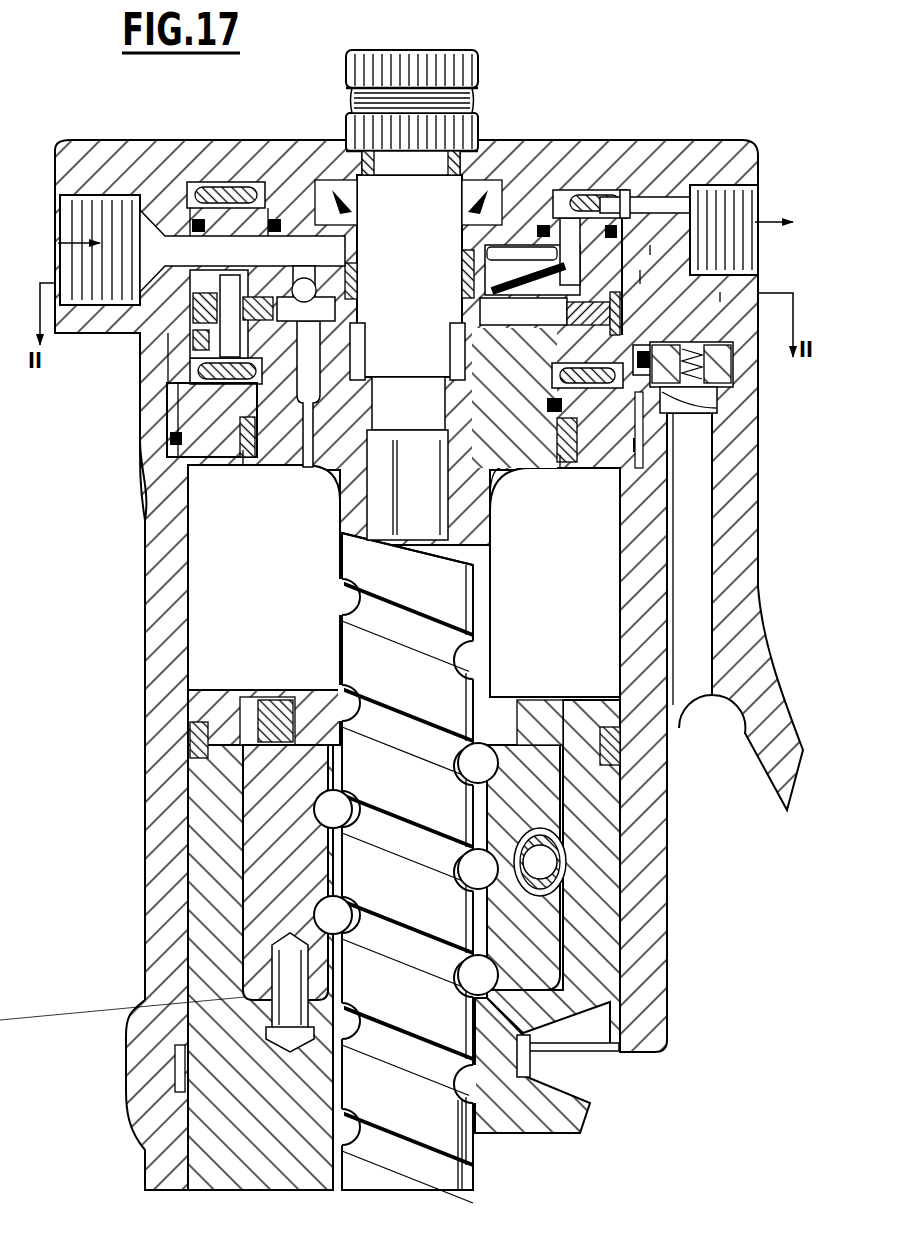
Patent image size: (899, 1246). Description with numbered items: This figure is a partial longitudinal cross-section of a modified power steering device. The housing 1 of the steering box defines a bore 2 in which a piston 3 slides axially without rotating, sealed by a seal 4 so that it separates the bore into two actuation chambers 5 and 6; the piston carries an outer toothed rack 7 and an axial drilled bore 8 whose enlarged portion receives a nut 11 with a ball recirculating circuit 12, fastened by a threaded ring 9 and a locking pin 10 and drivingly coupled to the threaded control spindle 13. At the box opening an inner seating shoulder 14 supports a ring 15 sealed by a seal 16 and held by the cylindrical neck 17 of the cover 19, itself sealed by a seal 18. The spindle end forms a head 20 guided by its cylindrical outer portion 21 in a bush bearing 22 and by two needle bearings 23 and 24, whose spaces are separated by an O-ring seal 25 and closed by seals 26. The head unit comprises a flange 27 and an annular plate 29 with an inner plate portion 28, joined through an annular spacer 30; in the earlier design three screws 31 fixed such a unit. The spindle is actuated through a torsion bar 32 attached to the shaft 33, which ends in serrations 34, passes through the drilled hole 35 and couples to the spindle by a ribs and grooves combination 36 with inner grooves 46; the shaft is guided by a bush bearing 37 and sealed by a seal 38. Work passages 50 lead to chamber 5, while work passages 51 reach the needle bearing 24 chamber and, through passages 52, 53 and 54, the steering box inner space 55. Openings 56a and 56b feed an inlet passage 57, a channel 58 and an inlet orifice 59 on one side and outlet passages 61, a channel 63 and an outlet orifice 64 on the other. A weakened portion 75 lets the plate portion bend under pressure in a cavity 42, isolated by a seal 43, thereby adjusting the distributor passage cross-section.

The housing 1 is at (165, 578).
The bore 2 is at (616, 652).
The piston 3 is at (200, 1000).
The seal 4 is at (622, 745).
The actuation chamber 5 is at (264, 577).
The actuation chamber 6 is at (600, 1040).
The toothed rack 7 is at (590, 1118).
The drilled bore 8 is at (470, 1130).
The threaded ring 9 is at (288, 710).
The locking pin 10 is at (290, 992).
The nut 11 is at (255, 805).
The ball recirculating circuit 12 is at (545, 862).
The threaded control spindle 13 is at (406, 868).
The inner seating shoulder 14 is at (555, 582).
The ring 15 is at (150, 490).
The seal 16 is at (668, 470).
The cylindrical neck 17 is at (178, 402).
The seal 18 is at (717, 412).
The cover 19 is at (222, 148).
The head 20 is at (526, 480).
The cylindrical outer portion 21 is at (246, 452).
The bush bearing 22 is at (560, 467).
The needle bearing 23 is at (215, 184).
The needle bearing 24 is at (715, 365).
The O-ring seal 25 is at (645, 346).
The seal 26 is at (288, 462).
The flange 27 is at (222, 443).
The inner plate portion 28 is at (522, 262).
The annular plate 29 is at (645, 277).
The annular spacer 30 is at (200, 300).
The screws 31 is at (218, 308).
The torsion bar 32 is at (407, 485).
The shaft 33 is at (409, 276).
The serrations 34 is at (468, 78).
The drilled hole 35 is at (440, 556).
The ribs and grooves combination 36 is at (362, 352).
The bush bearing 37 is at (447, 280).
The seal 38 is at (575, 236).
The cavity 42 is at (507, 252).
The seal 43 is at (356, 284).
The inner grooves 46 is at (725, 297).
The work passages 50 is at (306, 452).
The work passages 51 is at (455, 386).
The passage 52 is at (600, 467).
The passage 53 is at (657, 437).
The passage 54 is at (689, 559).
The steering box inner space 55 is at (706, 759).
The opening 56a is at (306, 300).
The opening 56b is at (550, 313).
The inlet passage 57 is at (300, 174).
The channel 58 is at (242, 251).
The inlet orifice 59 is at (80, 275).
The outlet passages 61 is at (620, 196).
The channel 63 is at (660, 205).
The outlet orifice 64 is at (735, 196).
The weakened portion 75 is at (655, 251).